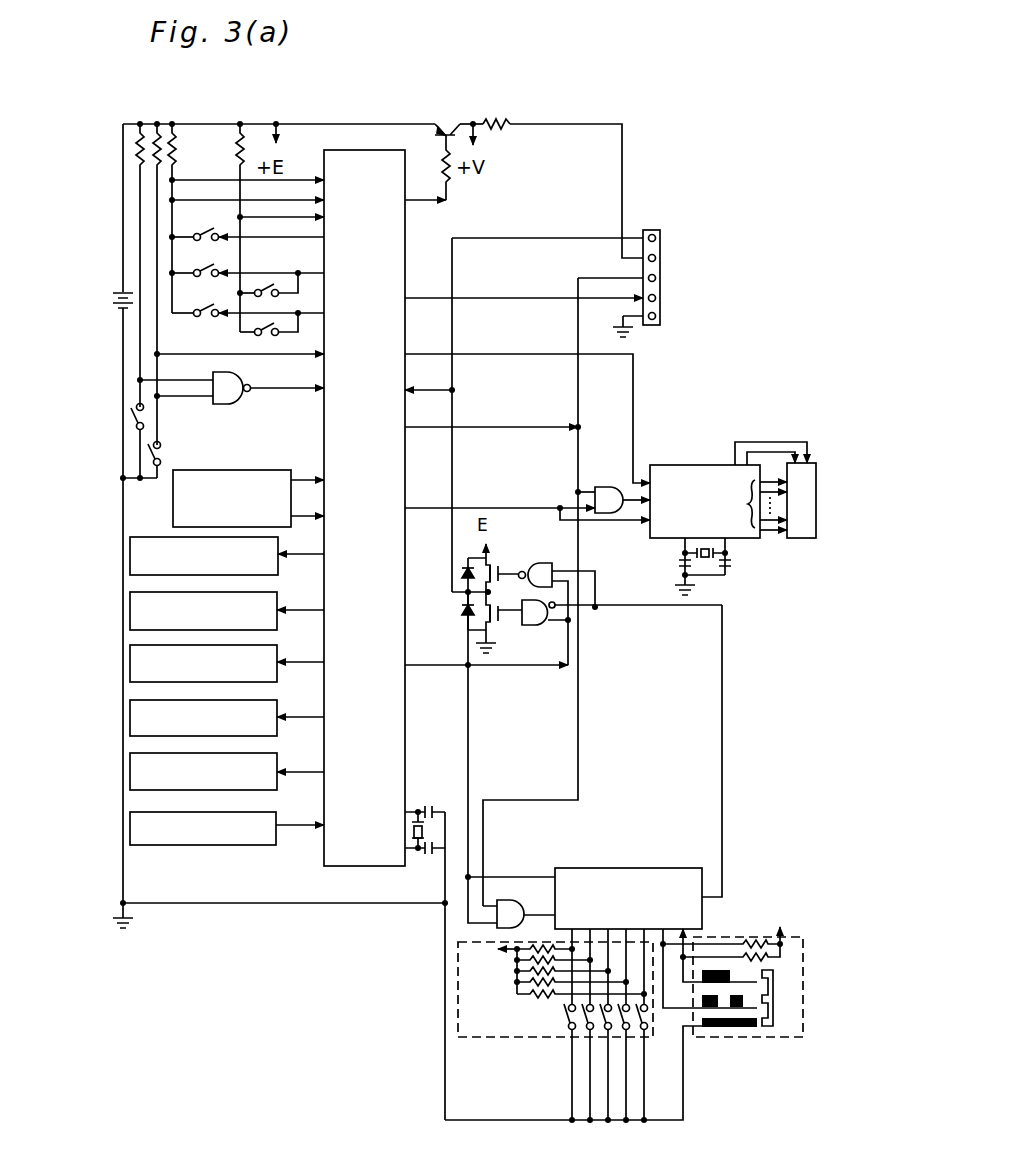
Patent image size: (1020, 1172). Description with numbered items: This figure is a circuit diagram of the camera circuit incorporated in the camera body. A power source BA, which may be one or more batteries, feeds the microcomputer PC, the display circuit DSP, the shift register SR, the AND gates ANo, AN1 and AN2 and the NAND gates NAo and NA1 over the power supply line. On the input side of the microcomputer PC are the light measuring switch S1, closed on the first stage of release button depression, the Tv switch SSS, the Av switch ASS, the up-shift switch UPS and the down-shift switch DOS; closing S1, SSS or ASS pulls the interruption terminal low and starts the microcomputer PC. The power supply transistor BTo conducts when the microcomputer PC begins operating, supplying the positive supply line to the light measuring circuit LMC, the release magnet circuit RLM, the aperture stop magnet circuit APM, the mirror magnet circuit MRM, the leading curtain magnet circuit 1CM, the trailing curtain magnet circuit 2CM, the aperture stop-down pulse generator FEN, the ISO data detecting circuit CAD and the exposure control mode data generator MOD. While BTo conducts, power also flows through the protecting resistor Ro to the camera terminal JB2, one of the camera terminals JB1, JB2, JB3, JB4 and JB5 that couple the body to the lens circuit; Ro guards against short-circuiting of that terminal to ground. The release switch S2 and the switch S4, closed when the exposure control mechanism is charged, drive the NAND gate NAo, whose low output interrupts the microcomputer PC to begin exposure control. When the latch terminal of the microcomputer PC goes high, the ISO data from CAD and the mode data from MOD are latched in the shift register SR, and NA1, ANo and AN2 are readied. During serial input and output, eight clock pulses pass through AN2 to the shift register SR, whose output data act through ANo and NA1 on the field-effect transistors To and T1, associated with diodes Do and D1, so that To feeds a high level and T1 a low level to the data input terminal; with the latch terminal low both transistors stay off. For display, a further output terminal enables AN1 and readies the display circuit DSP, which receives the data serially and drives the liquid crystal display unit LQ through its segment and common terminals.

The source of electric power BA is at (118, 312).
The light measuring switch S1 is at (195, 223).
The Tv switch SSS is at (195, 260).
The Av switch ASS is at (195, 299).
The up-shift switch UPS is at (266, 286).
The down-shift switch DOS is at (268, 338).
The release switch S2 is at (133, 420).
The switch S4 is at (150, 458).
The NAND gate NAo is at (228, 405).
The light measuring circuit LMC is at (280, 469).
The release magnet circuit RLM is at (133, 577).
The aperture stop magnet circuit APM is at (133, 632).
The mirror magnet circuit MRM is at (133, 684).
The leading curtain magnet circuit 1CM is at (133, 738).
The trailing curtain magnet circuit 2CM is at (133, 792).
The aperture stop-down pulse generator FEN is at (242, 846).
The microcomputer PC is at (392, 745).
The power supply transistor BTo is at (444, 118).
The protecting resistor Ro is at (500, 118).
The camera terminal JB1 is at (656, 239).
The camera terminal JB2 is at (656, 259).
The camera terminal JB3 is at (656, 279).
The camera terminal JB4 is at (656, 299).
The camera terminal JB5 is at (656, 317).
The AND gate AN1 is at (608, 486).
The display circuit DSP is at (698, 464).
The liquid crystal display unit LQ is at (800, 540).
The diode Do is at (462, 575).
The diode D1 is at (462, 611).
The field-effect transistor To is at (495, 566).
The field-effect transistor T1 is at (493, 628).
The NAND gate NA1 is at (540, 563).
The AND gate ANo is at (537, 626).
The shift register SR is at (628, 867).
The AND gate AN2 is at (510, 899).
The ISO data detecting circuit CAD is at (505, 1038).
The exposure control mode data generator MOD is at (742, 1038).